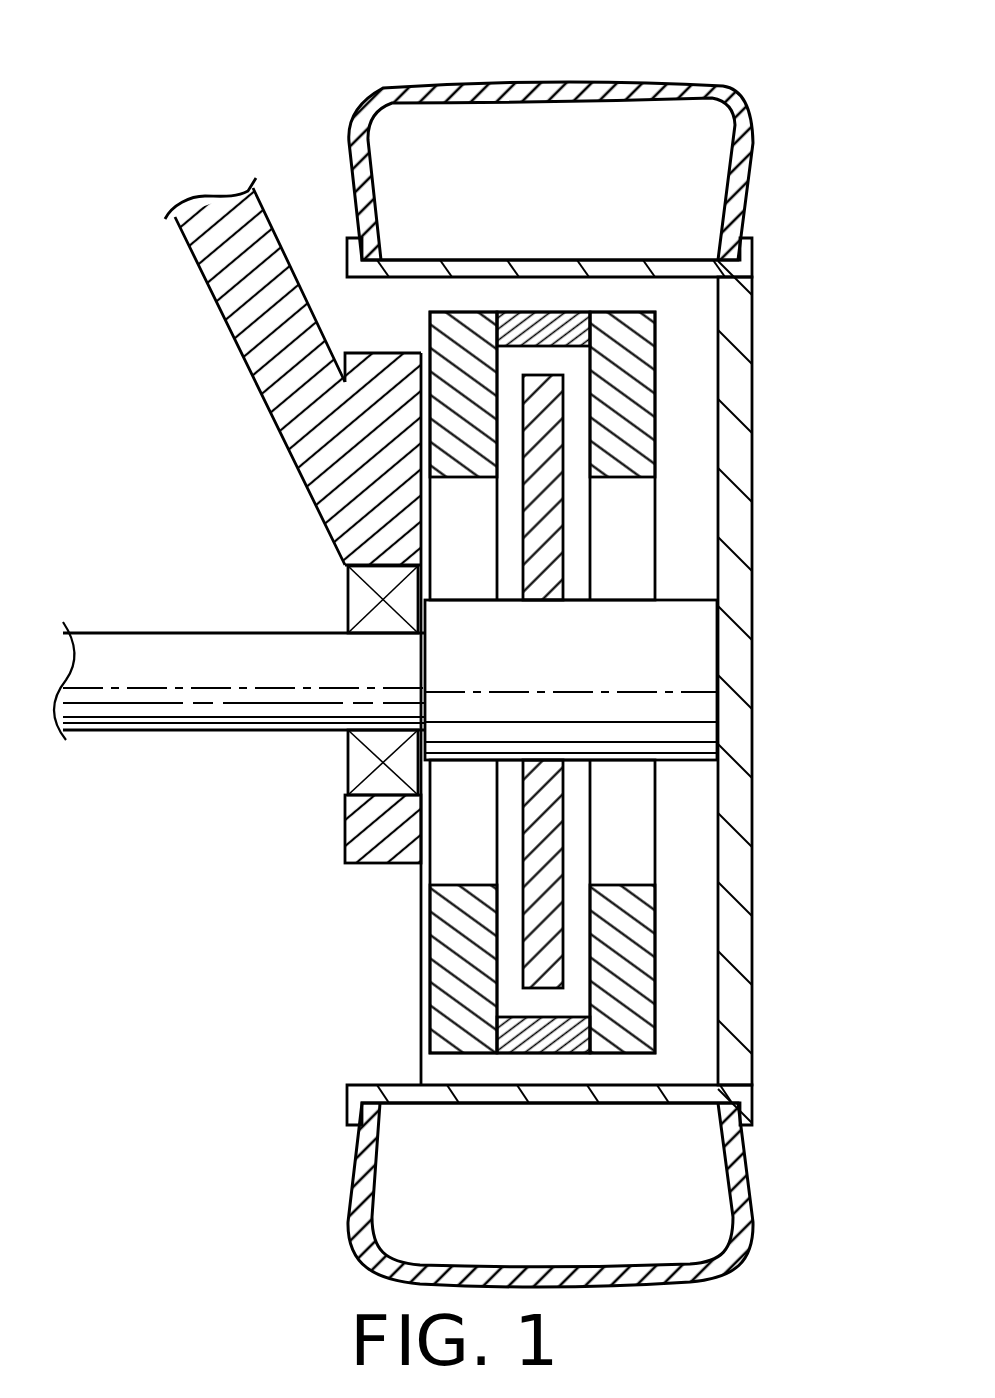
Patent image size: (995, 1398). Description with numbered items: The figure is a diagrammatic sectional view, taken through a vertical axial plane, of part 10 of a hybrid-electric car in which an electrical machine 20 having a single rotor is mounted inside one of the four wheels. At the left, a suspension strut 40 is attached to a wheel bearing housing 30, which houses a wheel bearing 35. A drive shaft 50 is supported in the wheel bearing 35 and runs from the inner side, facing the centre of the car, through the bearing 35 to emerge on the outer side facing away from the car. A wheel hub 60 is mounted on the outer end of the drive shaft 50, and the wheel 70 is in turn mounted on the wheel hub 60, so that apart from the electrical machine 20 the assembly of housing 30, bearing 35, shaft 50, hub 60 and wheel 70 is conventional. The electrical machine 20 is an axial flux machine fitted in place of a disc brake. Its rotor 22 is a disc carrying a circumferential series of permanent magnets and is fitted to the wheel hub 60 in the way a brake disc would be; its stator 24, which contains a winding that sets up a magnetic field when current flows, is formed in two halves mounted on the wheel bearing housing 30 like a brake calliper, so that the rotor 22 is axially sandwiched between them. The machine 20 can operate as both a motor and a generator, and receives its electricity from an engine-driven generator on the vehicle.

The part of the vehicle 10 is at (599, 644).
The electrical machine 20 is at (628, 670).
The rotor 22 is at (563, 543).
The stator 24 is at (655, 447).
The wheel bearing housing 30 is at (345, 562).
The wheel bearing 35 is at (347, 602).
The suspension strut 40 is at (246, 366).
The drive shaft 50 is at (152, 730).
The wheel hub 60 is at (695, 632).
The wheel 70 is at (756, 858).